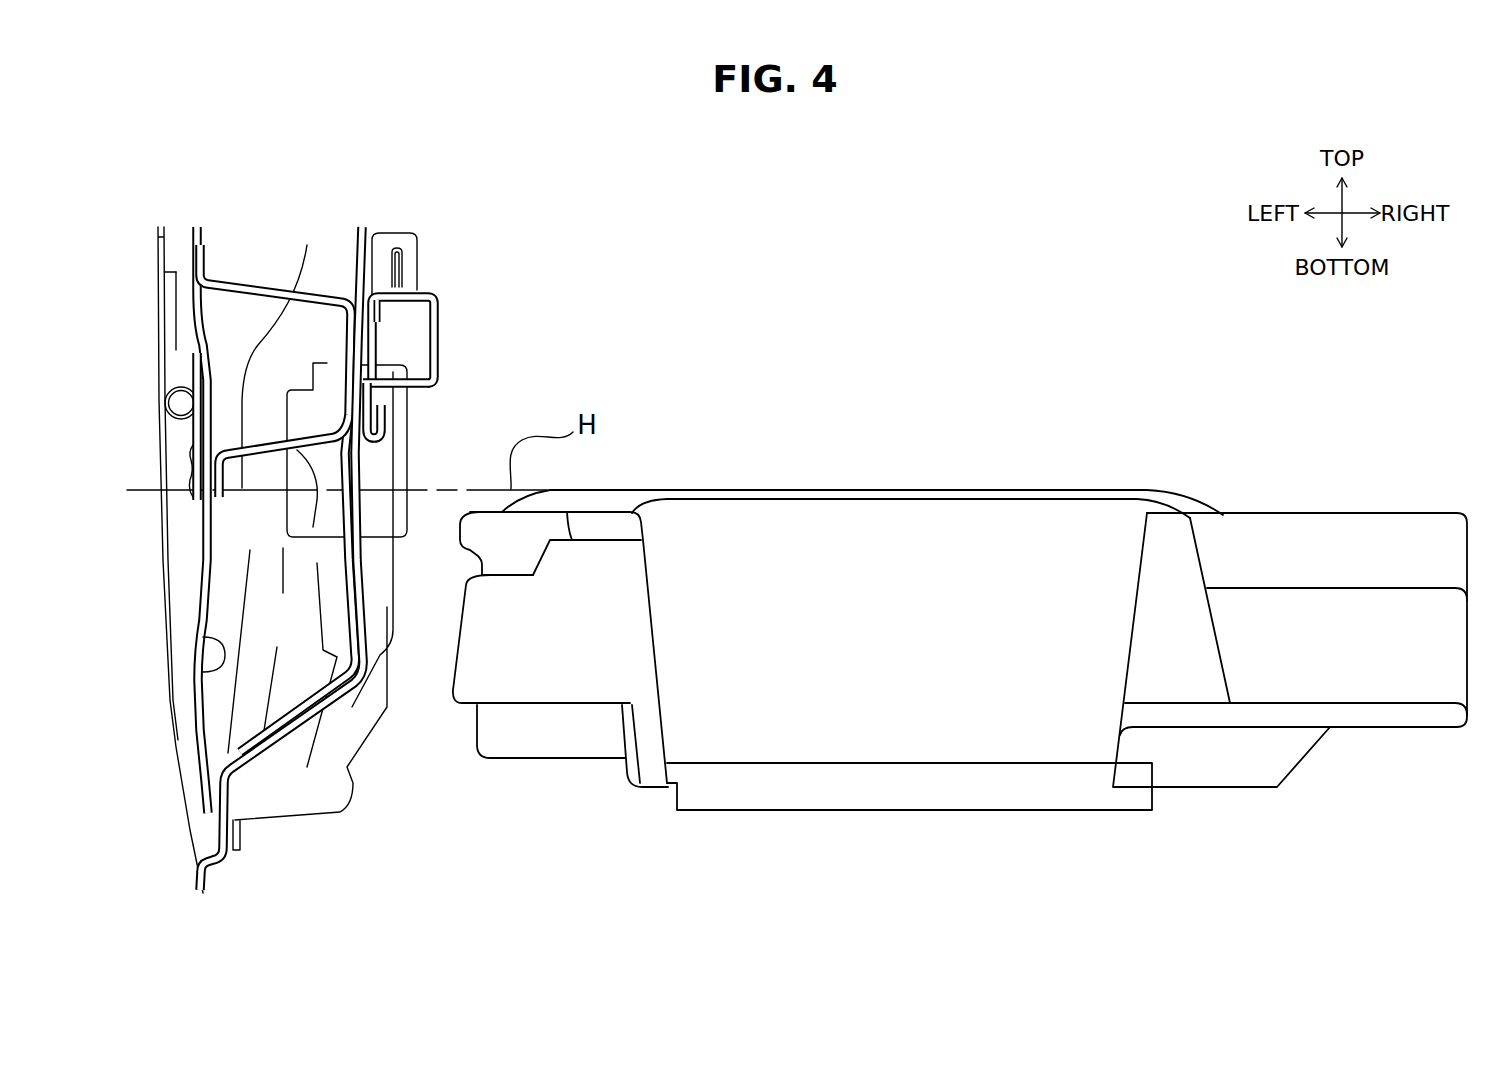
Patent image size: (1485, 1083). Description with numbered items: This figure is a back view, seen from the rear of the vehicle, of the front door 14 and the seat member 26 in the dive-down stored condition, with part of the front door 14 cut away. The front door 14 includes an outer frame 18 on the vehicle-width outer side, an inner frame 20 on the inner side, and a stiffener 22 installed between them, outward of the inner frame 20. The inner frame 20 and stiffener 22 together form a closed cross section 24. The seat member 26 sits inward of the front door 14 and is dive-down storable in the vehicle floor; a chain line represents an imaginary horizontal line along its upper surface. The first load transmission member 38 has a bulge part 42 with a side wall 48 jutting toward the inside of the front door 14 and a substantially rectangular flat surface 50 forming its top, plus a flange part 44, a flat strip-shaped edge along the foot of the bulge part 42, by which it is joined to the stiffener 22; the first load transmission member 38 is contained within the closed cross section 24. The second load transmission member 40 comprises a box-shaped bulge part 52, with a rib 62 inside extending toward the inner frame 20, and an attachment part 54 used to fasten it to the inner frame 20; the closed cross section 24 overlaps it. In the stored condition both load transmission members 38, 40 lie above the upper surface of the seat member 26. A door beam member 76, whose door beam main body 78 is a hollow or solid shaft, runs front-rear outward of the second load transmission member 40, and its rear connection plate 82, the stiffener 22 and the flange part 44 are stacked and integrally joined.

The front door 14 is at (468, 190).
The outer frame 18 is at (160, 397).
The inner frame 20 is at (363, 468).
The stiffener 22 is at (193, 675).
The closed cross section 24 is at (263, 632).
The seat member 26 is at (1085, 460).
The first load transmission member 38 is at (303, 272).
The second load transmission member 40 is at (453, 349).
The bulge part 42 is at (340, 277).
The flange part 44 is at (205, 262).
The side wall 48 is at (277, 277).
The flat surface 50 is at (415, 385).
The box-shaped bulge part 52 is at (410, 292).
The attachment part 54 is at (388, 417).
The rib 62 is at (383, 317).
The door beam member 76 is at (178, 370).
The door beam main body 78 is at (183, 433).
The rear connection plate 82 is at (187, 465).